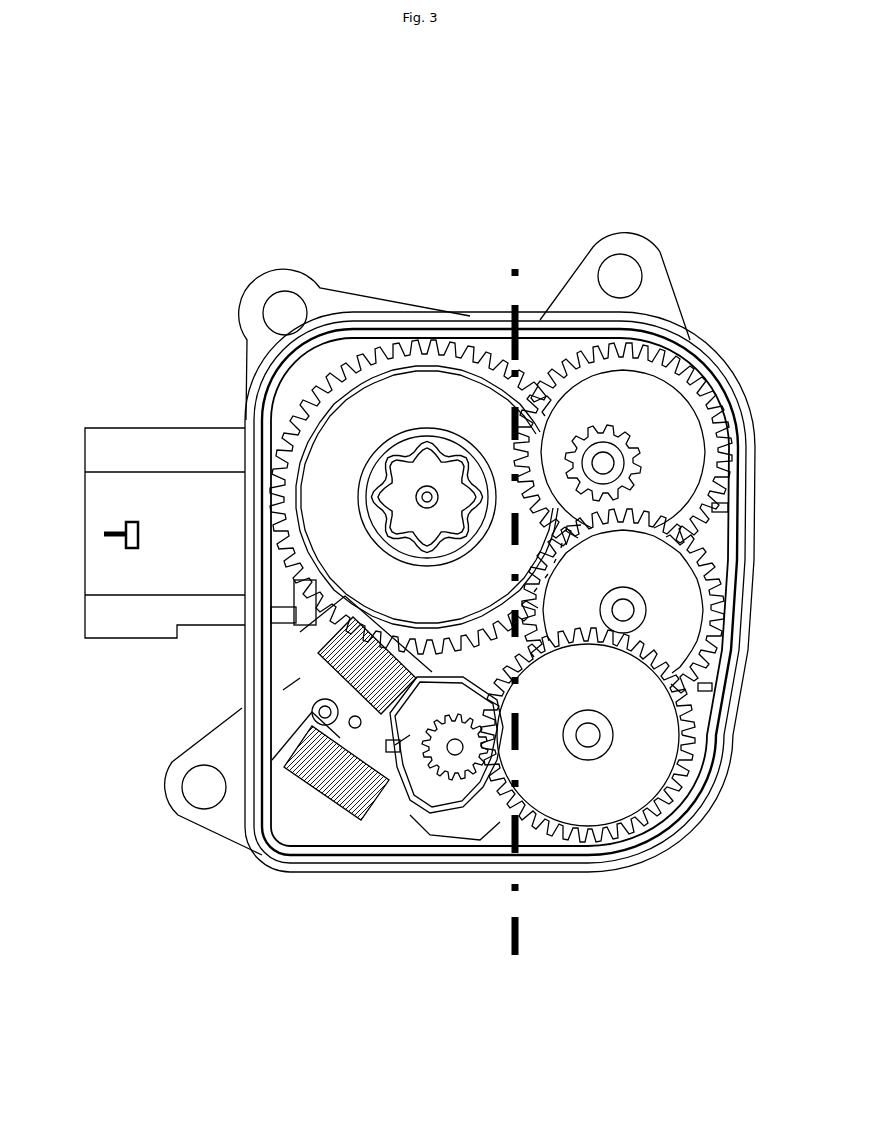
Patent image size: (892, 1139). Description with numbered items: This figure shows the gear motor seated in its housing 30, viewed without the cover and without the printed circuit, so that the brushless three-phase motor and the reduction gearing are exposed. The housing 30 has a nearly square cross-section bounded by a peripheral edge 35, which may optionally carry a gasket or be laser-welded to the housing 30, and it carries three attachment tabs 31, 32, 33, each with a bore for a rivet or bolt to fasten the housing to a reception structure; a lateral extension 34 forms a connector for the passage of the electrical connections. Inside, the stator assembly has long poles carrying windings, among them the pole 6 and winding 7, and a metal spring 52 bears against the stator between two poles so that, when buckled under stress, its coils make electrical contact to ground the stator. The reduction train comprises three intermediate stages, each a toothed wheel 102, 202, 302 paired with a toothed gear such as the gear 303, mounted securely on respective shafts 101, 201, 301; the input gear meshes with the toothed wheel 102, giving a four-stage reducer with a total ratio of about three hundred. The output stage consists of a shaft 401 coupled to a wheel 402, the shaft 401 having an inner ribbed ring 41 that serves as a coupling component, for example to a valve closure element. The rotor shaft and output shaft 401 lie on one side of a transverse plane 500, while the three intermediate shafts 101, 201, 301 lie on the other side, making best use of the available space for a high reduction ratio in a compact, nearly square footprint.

The long pole 6 is at (263, 847).
The winding 7 is at (302, 667).
The housing 30 is at (353, 863).
The attachment tab 31 is at (205, 783).
The attachment tab 32 is at (275, 292).
The attachment tab 33 is at (633, 278).
The lateral extension 34 is at (165, 638).
The peripheral edge 35 is at (567, 867).
The inner ribbed ring 41 is at (418, 430).
The metal spring 52 is at (302, 702).
The shaft 101 is at (690, 760).
The toothed wheel 102 is at (630, 777).
The shaft 201 is at (647, 612).
The toothed wheel 202 is at (665, 633).
The shaft 301 is at (643, 460).
The toothed wheel 302 is at (742, 507).
The toothed gear 303 is at (620, 423).
The output shaft 401 is at (412, 488).
The output wheel 402 is at (460, 403).
The transverse plane 500 is at (517, 937).